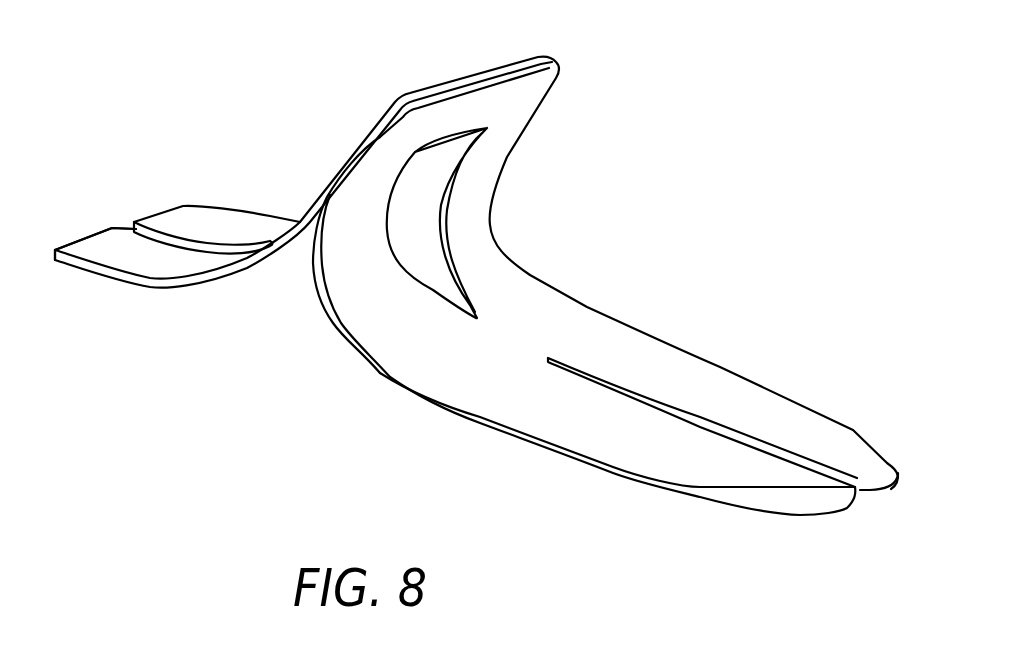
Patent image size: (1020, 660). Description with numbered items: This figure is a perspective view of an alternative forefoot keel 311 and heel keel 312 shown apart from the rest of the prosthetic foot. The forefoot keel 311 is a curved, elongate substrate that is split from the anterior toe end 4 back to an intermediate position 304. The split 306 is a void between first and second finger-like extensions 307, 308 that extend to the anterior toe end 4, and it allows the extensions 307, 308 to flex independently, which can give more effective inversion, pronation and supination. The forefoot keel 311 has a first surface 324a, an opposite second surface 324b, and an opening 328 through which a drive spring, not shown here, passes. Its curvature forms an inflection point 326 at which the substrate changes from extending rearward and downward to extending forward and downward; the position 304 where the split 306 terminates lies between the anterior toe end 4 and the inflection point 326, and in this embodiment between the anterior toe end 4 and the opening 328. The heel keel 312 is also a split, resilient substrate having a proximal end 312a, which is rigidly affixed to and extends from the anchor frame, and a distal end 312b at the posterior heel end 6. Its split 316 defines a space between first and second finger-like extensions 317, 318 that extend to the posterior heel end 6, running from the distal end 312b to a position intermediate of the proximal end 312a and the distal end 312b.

The heel keel 312 is at (258, 198).
The proximal end 312a is at (393, 92).
The distal end 312b is at (82, 271).
The split 316 is at (181, 238).
The first finger-like extension 317 is at (232, 226).
The second finger-like extension 318 is at (158, 265).
The inflection point 326 is at (298, 307).
The opening 328 is at (438, 236).
The forefoot keel 311 is at (677, 273).
The intermediate position 304 is at (554, 342).
The split 306 is at (684, 420).
The first finger-like extension 307 is at (740, 386).
The second finger-like extension 308 is at (647, 462).
The first surface 324a is at (473, 383).
The second surface 324b is at (463, 417).
The posterior heel end 6 is at (90, 187).
The anterior toe end 4 is at (822, 548).